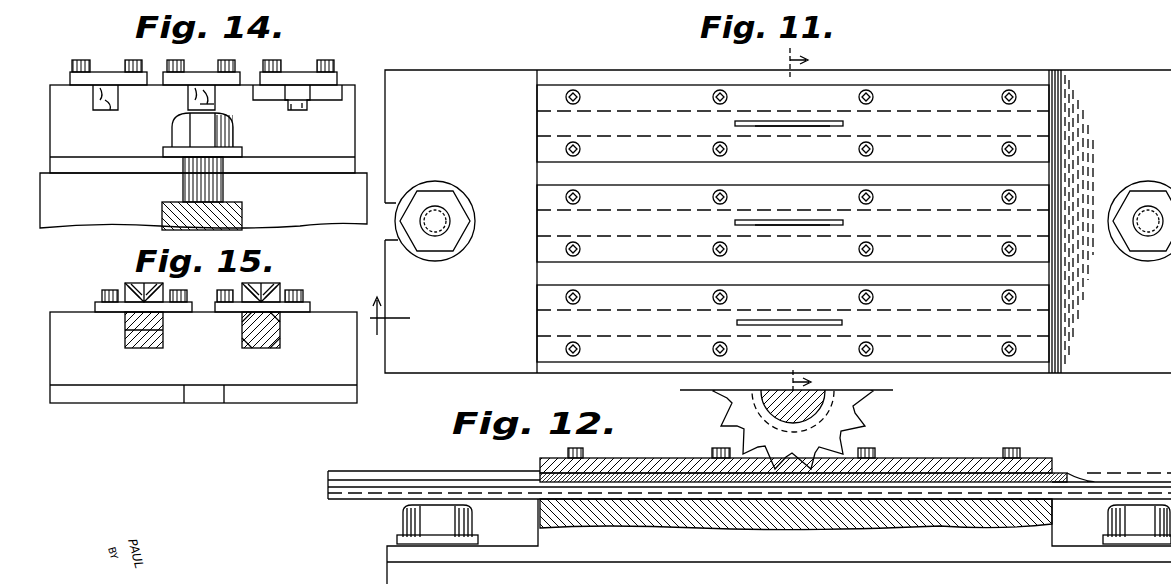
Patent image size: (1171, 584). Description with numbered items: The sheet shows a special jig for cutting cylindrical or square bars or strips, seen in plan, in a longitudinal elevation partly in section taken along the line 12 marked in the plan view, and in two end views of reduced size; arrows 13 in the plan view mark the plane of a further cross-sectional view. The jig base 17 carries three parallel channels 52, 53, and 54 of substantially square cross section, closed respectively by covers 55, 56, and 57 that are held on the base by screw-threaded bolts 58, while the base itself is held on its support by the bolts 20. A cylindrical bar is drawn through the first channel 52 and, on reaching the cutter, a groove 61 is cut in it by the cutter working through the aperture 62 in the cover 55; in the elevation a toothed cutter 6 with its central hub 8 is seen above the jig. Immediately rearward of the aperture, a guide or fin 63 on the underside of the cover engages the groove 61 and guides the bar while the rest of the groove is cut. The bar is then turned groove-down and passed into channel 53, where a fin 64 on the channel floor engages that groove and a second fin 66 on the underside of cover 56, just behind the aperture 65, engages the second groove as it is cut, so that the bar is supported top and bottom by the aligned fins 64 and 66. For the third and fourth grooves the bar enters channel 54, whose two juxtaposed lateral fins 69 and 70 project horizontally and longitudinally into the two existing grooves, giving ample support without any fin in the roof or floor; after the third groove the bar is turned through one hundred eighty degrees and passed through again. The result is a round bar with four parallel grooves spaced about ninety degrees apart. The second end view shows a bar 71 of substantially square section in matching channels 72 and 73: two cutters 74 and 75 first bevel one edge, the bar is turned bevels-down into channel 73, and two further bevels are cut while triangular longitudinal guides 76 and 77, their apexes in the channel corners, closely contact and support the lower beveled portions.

In FIG. 12, the cutter blade 6 is at (870, 418).
In FIG. 12, the blade hub 8 is at (762, 407).
In FIG. 11, the line 12— 12 is at (390, 315).
In FIG. 11, the section line 13 is at (812, 220).
In FIG. 14, the base of the jig 17 is at (340, 157).
In FIG. 15, the base of the jig 17 is at (342, 385).
In FIG. 11, the base of the jig 17 is at (1120, 80).
In FIG. 12, the base of the jig 17 is at (505, 545).
In FIG. 14, the bolts 20 is at (195, 188).
In FIG. 11, the bolts 20 is at (435, 215).
In FIG. 12, the bolts 20 is at (436, 505).
In FIG. 14, the channel 52 is at (108, 108).
In FIG. 11, the channel 52 is at (808, 128).
In FIG. 14, the channel 53 is at (205, 109).
In FIG. 11, the channel 53 is at (808, 228).
In FIG. 14, the channel 54 is at (296, 111).
In FIG. 11, the channel 54 is at (808, 328).
In FIG. 11, the cover 55 is at (634, 92).
In FIG. 11, the cover 56 is at (652, 195).
In FIG. 11, the cover 57 is at (652, 295).
In FIG. 11, the screw-threaded bolts 58 is at (565, 146).
In FIG. 12, the screw-threaded bolts 58 is at (582, 450).
In FIG. 12, the groove 61 is at (1063, 472).
In FIG. 11, the aperture 62 is at (784, 120).
In FIG. 14, the guide or fin 63 is at (97, 97).
In FIG. 11, the guide or fin 63 is at (950, 121).
In FIG. 14, the fin 64 is at (209, 98).
In FIG. 11, the fin 64 is at (630, 220).
In FIG. 11, the aperture 65 is at (796, 219).
In FIG. 14, the fin 66 is at (192, 96).
In FIG. 11, the fin 66 is at (945, 220).
In FIG. 14, the fin 69 is at (290, 104).
In FIG. 11, the fin 69 is at (950, 320).
In FIG. 14, the fin 70 is at (305, 104).
In FIG. 11, the fin 70 is at (946, 330).
In FIG. 15, the bar 71 is at (132, 333).
In FIG. 15, the channel 72 is at (160, 333).
In FIG. 15, the channel 73 is at (278, 333).
In FIG. 15, the cutter 74 is at (110, 292).
In FIG. 15, the cutter 75 is at (140, 284).
In FIG. 15, the guide 76 is at (248, 344).
In FIG. 15, the guide 77 is at (272, 344).